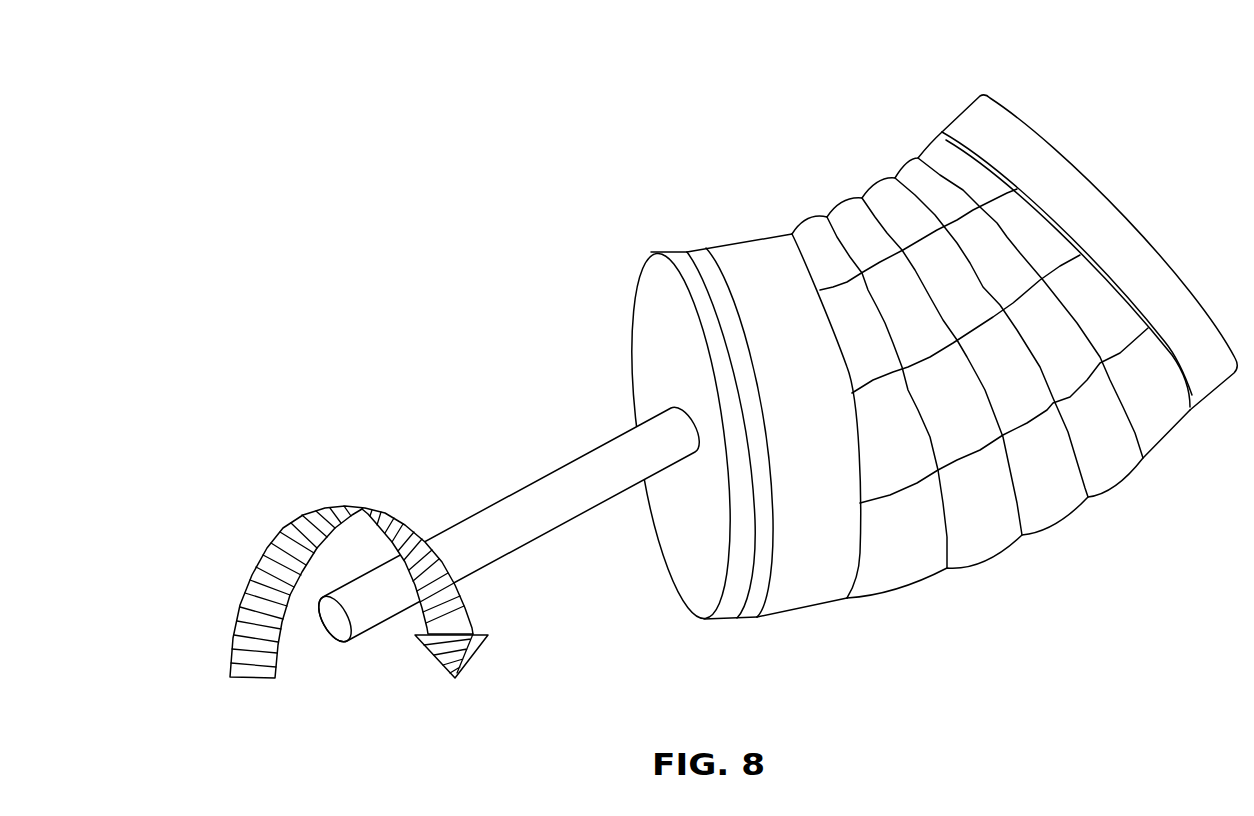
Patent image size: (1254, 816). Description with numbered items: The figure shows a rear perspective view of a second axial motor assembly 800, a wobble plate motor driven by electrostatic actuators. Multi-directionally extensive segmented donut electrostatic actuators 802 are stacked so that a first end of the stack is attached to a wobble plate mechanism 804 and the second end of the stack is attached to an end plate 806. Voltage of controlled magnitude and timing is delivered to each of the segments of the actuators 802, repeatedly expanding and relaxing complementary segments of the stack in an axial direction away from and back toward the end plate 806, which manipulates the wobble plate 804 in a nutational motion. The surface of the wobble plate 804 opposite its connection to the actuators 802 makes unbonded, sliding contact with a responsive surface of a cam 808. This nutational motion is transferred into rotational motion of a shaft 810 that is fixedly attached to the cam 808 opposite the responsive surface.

The second axial motor assembly 800 is at (364, 82).
The multi-directionally extensive segmented donut electrostatic actuators 802 is at (1022, 397).
The wobble plate mechanism 804 is at (753, 235).
The end plate 806 is at (1063, 145).
The cam 808 is at (642, 283).
The shaft 810 is at (553, 472).